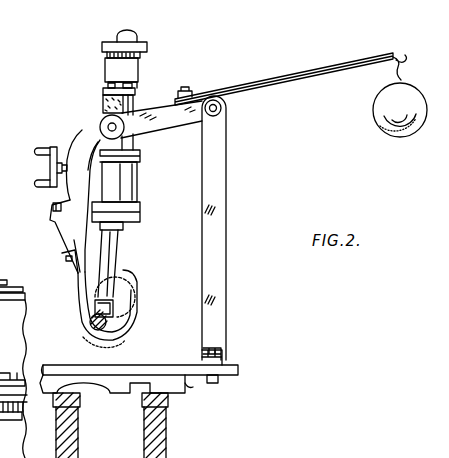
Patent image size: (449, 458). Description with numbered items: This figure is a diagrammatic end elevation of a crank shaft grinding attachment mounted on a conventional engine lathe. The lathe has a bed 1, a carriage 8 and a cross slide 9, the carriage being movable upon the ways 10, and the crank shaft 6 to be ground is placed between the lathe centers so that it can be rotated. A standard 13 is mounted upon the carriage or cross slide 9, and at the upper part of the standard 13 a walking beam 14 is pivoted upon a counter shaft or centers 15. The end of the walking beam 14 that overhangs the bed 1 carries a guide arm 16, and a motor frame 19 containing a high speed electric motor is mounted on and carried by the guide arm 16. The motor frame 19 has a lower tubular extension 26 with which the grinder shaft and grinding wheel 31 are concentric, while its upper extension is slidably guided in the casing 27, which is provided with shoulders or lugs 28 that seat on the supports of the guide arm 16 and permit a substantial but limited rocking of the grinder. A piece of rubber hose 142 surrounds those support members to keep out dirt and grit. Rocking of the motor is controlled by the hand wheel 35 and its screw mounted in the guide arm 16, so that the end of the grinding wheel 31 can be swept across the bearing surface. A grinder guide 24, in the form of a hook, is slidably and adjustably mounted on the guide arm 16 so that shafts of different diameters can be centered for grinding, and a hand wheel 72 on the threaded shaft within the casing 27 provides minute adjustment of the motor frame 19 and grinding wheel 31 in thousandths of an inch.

The bed 1 is at (162, 448).
The crank shaft 6 is at (130, 290).
The carriage 8 is at (196, 397).
The cross slide 9 is at (144, 365).
The ways 10 is at (143, 400).
The standard 13 is at (220, 219).
The walking beam 14 is at (165, 122).
The counter shaft or centers 15 is at (223, 108).
The guide arm 16 is at (82, 130).
The motor frame 19 is at (140, 182).
The grinder guide 24 is at (80, 315).
The lower tubular extension 26 is at (122, 249).
The casing 27 is at (139, 67).
The shoulders or lugs 28 is at (110, 93).
The grinding wheel 31 is at (112, 312).
The hand wheel 35 is at (42, 156).
The hand wheel 72 is at (147, 44).
The rubber hose 142 is at (104, 105).